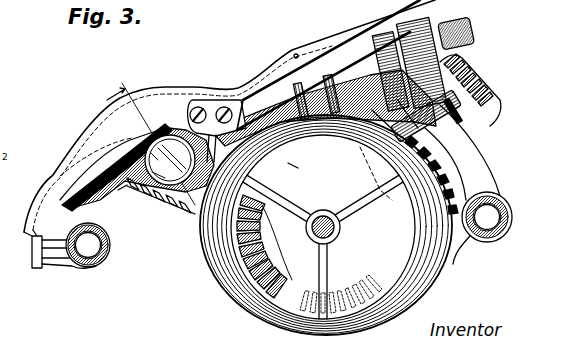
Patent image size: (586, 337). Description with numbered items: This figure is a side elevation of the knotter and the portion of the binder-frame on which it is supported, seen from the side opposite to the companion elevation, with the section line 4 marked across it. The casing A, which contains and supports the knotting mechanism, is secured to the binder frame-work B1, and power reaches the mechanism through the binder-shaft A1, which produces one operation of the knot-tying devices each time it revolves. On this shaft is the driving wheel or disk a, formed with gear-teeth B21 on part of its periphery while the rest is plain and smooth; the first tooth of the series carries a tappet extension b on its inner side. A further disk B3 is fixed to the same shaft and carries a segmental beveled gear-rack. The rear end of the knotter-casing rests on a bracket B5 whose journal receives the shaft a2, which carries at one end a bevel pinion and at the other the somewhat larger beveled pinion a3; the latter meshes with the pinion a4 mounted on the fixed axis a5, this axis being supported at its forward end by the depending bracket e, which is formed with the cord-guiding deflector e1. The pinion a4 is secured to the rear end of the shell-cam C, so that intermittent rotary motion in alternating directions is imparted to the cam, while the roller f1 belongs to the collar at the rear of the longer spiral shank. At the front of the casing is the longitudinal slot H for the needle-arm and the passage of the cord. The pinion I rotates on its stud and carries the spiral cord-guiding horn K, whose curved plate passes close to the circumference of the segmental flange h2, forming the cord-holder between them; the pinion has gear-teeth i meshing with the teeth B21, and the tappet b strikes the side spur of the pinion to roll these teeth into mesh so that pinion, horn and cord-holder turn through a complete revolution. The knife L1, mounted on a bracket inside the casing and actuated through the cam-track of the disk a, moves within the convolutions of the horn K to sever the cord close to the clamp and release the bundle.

The section line 4 4 is at (151, 137).
The casing A is at (230, 116).
The knife L1 is at (190, 118).
The spiral cord-guiding horn K is at (153, 128).
The depending bracket e is at (216, 131).
The shell-cam C is at (328, 65).
The anti-friction roller f1 is at (343, 77).
The pinion a4 is at (440, 13).
The fixed axis a5 is at (470, 33).
The beveled pinion a3 is at (480, 92).
The shaft a2 is at (450, 127).
The disk B3 is at (329, 225).
The cord-guiding projection or deflector e1 is at (281, 165).
The binder-shaft A1 is at (342, 230).
The bracket B5 is at (481, 168).
The frame-work B1 is at (507, 235).
The tappet extension b is at (437, 210).
The gear-teeth B21 is at (455, 252).
The longitudinal slot H is at (170, 160).
The gear-teeth of pinion i is at (152, 207).
The pinion I is at (126, 187).
The segmental flange h2 is at (194, 215).
The driving wheel or disk a is at (202, 248).